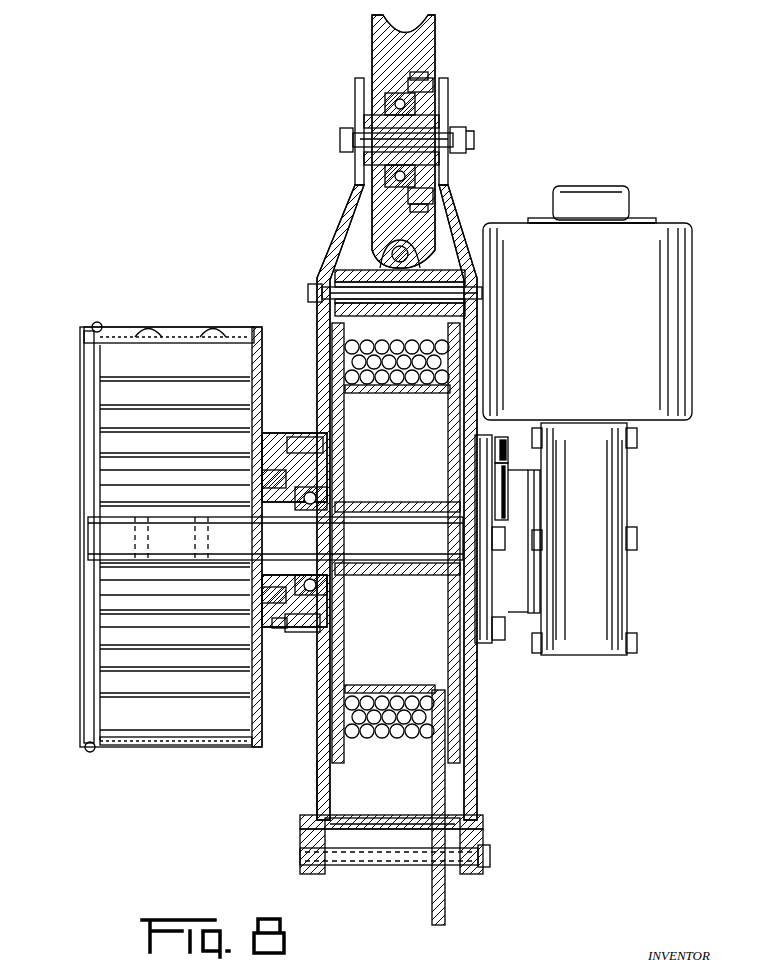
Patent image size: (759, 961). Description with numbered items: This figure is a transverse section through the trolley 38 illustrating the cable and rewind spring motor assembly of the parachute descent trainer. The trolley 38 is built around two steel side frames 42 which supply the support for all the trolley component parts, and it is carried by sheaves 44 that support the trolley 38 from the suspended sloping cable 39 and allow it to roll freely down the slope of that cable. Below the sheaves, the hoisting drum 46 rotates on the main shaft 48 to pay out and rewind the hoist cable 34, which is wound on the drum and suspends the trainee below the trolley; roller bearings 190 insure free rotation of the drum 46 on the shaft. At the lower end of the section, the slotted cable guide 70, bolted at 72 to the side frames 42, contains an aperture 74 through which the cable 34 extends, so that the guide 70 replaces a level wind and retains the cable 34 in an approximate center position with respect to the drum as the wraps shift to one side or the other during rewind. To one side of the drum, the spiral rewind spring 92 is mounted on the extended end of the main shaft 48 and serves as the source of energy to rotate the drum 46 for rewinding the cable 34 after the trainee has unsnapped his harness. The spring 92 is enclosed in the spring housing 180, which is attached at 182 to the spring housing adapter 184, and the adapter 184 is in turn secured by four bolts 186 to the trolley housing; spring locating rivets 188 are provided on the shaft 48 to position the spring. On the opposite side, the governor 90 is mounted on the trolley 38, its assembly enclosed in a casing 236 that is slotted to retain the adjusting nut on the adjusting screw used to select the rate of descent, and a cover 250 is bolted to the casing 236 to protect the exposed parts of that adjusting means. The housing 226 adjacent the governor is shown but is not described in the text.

The sheaves 44 is at (430, 40).
The sloping cable 39 is at (408, 250).
The trolley 38 is at (335, 218).
The hoist cable 34 is at (383, 350).
The main shaft 48 is at (400, 530).
The hoisting drum 46 is at (432, 670).
The spring locating rivets 188 is at (205, 540).
The spring housing 180 is at (82, 500).
The rewind spring 92 is at (172, 375).
The attachment point of spring housing 182 is at (268, 470).
The spring housing adapter 184 is at (312, 468).
The roller bearings 190 is at (325, 498).
The bolts 186 is at (305, 630).
The side frames 42 is at (316, 795).
The slotted cable guide 70 is at (485, 826).
The aperture 74 is at (376, 825).
The bolt attachment of cable guide 72 is at (491, 860).
The governor 90 is at (678, 259).
The governor casing 236 is at (678, 411).
The cover 250 is at (614, 198).
The gear housing 226 is at (618, 620).